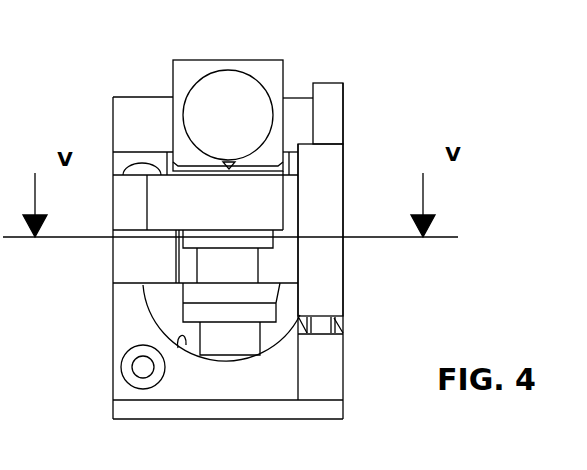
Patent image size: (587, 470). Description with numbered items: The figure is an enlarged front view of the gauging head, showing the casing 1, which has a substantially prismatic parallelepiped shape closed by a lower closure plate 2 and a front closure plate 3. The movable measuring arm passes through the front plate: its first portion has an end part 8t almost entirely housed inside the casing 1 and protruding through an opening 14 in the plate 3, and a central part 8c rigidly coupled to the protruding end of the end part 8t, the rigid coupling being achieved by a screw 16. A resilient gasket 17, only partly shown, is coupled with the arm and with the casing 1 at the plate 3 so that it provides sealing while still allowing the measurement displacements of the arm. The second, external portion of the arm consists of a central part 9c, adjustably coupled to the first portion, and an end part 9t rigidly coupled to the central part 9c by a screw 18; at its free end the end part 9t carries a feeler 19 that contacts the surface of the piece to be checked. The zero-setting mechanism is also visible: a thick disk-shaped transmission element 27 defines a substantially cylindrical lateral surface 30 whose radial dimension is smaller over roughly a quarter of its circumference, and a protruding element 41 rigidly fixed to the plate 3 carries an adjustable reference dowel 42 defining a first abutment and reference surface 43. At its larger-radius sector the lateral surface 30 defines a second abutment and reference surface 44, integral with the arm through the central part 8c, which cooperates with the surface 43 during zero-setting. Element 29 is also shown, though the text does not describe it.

The casing 1 is at (140, 110).
The lower closure plate 2 is at (128, 408).
The front closure plate 3 is at (132, 340).
The end part 9t is at (282, 65).
The central part 9c is at (182, 213).
The feeler 19 is at (226, 165).
The upper block 29 is at (328, 105).
The transmission element 27 is at (328, 163).
The lateral surface 30 is at (328, 193).
The central part 8c is at (282, 265).
The screw 18 is at (213, 268).
The end part 8t is at (212, 295).
The screw 16 is at (232, 343).
The resilient gasket 17 is at (273, 330).
The opening 14 is at (178, 348).
The protruding element 41 is at (328, 382).
The reference dowel 42 is at (332, 355).
The first abutment and reference surface 43 is at (326, 307).
The second abutment and reference surface 44 is at (352, 328).